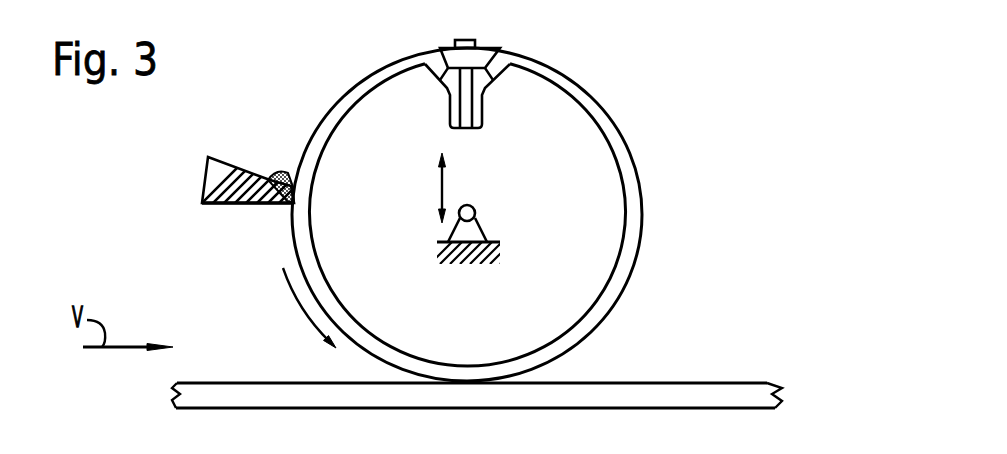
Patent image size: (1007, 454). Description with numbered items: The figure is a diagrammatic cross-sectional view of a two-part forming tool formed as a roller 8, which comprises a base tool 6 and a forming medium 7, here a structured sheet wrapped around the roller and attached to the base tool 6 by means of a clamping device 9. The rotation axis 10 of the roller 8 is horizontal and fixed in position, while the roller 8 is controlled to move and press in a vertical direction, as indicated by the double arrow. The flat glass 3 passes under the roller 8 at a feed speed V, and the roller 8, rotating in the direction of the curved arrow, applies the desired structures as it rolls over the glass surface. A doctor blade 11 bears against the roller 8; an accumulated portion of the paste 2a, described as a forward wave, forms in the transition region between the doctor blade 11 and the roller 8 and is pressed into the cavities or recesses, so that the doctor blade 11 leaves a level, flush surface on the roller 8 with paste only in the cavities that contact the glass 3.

The accumulated portion of the paste 2a is at (283, 178).
The glass 3 is at (643, 392).
The base tool 6 is at (555, 117).
The forming medium 7 is at (636, 246).
The roller 8 is at (494, 201).
The clamping device 9 is at (473, 60).
The rotation axis 10 is at (475, 210).
The doctor blade 11 is at (218, 184).